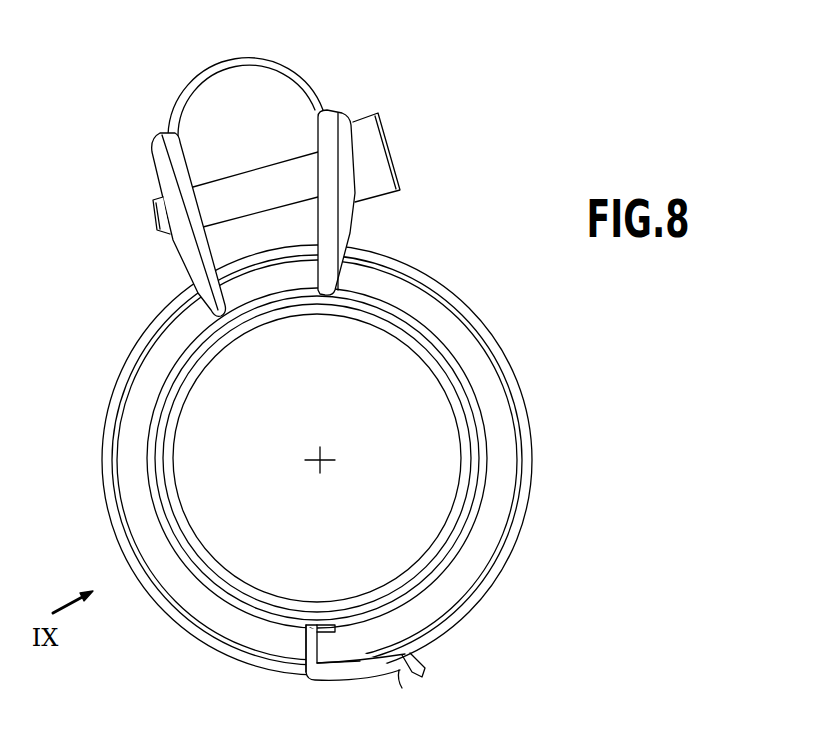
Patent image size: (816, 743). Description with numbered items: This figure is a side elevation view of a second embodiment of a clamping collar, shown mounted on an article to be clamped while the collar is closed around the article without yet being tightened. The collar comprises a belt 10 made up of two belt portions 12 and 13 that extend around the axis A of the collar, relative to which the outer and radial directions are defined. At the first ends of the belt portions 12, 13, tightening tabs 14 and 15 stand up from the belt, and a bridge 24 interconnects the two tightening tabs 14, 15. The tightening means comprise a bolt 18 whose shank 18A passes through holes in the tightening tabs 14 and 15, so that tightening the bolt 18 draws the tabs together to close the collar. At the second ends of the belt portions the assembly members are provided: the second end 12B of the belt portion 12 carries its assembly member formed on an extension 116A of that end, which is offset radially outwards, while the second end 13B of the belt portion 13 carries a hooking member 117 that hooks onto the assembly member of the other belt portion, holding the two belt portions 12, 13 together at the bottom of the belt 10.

The belt 10 is at (522, 380).
The belt portion 12 is at (192, 595).
The belt portion 13 is at (507, 475).
The tightening tab 14 is at (177, 177).
The tightening tab 15 is at (328, 134).
The bolt 18 is at (144, 231).
The shank 18A is at (248, 183).
The bridge 24 is at (226, 62).
The axis A is at (321, 460).
The second end 12B is at (297, 632).
The second end 13B is at (343, 630).
The extension 116A is at (362, 677).
The hooking member 117 is at (402, 672).